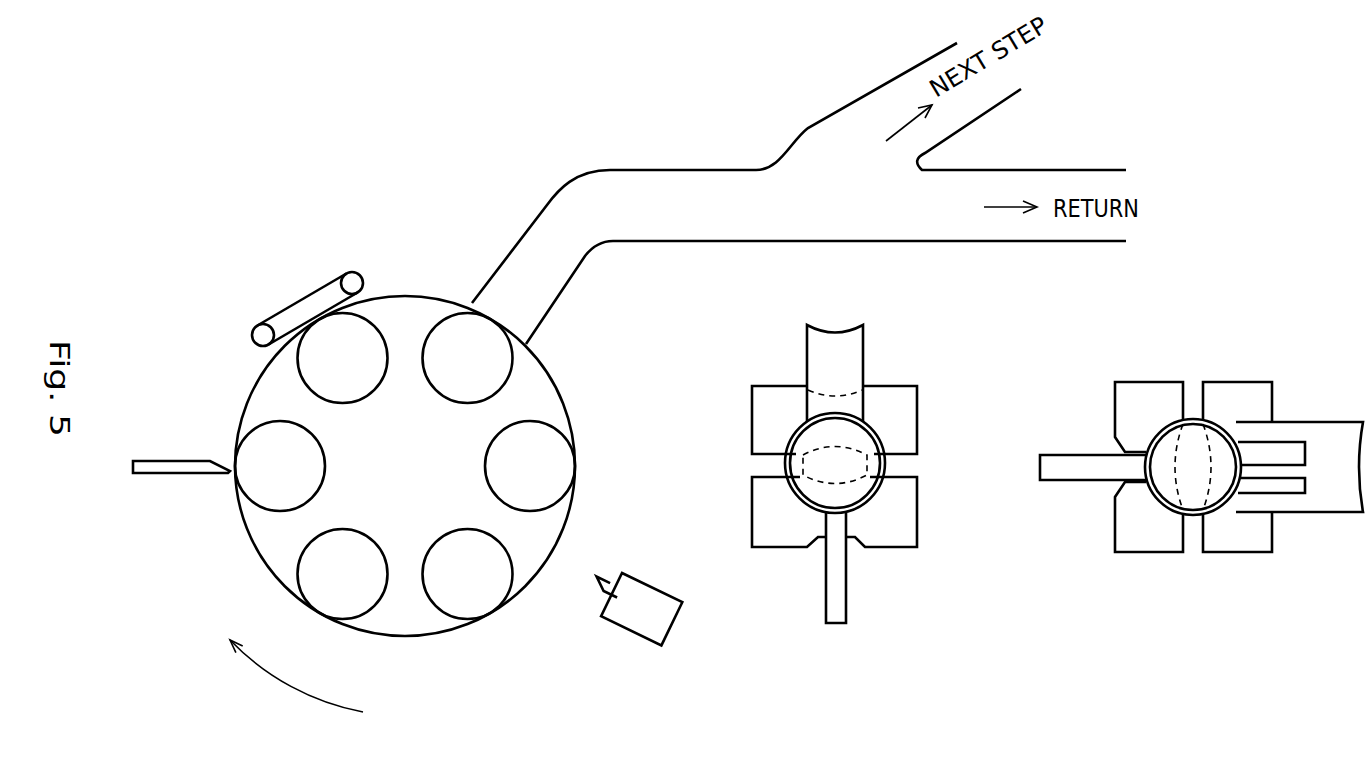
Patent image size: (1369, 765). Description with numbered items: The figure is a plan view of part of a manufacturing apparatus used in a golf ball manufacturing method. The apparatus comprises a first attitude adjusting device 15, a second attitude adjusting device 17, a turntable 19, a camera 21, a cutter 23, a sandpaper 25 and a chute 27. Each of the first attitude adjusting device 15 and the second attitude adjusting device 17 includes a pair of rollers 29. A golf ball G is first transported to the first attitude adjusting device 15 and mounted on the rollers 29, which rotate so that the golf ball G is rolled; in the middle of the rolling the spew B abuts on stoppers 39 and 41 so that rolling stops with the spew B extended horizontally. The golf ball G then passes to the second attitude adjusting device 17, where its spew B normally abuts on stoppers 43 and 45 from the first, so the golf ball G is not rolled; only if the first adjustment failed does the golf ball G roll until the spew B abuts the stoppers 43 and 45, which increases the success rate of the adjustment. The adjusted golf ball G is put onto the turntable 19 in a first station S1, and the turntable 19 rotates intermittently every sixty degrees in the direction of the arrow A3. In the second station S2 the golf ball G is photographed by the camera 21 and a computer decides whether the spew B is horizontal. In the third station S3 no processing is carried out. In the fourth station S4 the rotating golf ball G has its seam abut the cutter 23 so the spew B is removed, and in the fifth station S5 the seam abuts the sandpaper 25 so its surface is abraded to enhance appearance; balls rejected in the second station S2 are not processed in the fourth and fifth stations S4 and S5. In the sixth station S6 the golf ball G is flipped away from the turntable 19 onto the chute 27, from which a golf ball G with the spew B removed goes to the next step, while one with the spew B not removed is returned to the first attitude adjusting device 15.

The first attitude adjusting device 15 is at (1207, 570).
The second attitude adjusting device 17 is at (898, 567).
The turntable 19 is at (398, 620).
The camera 21 is at (648, 623).
The cutter 23 is at (166, 467).
The sandpaper 25 is at (320, 280).
The chute 27 is at (579, 194).
The roller 29 is at (903, 412).
The stopper 39 is at (1327, 500).
The stopper 41 is at (1077, 473).
The stopper 43 is at (847, 342).
The stopper 45 is at (830, 582).
The golf ball G is at (363, 340).
The spew B is at (797, 498).
The arrow A3 is at (296, 684).
The first station S1 is at (589, 447).
The second station S2 is at (502, 631).
The third station S3 is at (323, 638).
The fourth station S4 is at (171, 444).
The fifth station S5 is at (286, 287).
The sixth station S6 is at (545, 348).